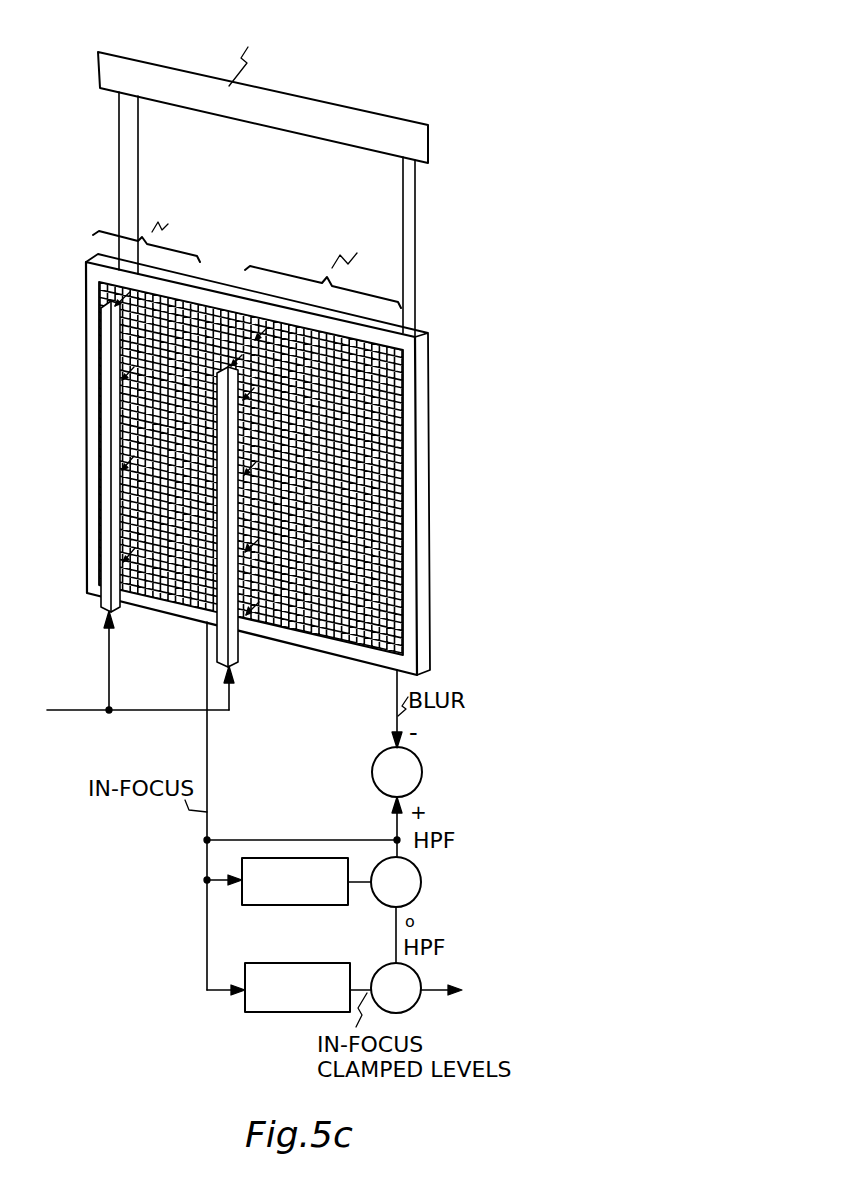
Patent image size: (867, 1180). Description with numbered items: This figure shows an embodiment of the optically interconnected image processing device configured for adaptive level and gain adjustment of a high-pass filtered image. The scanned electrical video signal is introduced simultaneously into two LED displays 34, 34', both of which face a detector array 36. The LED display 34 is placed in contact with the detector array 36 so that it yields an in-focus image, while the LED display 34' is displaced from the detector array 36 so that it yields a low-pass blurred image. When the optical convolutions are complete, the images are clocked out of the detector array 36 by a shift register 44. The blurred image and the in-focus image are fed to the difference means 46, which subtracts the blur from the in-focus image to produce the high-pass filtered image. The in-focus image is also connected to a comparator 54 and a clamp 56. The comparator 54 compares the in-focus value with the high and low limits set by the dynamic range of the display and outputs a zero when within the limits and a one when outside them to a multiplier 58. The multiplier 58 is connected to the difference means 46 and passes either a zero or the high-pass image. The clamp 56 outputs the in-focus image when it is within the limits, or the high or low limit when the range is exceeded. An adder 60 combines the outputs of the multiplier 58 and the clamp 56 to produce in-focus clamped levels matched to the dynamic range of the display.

The shift register 44 is at (427, 125).
The detector array 36 is at (430, 388).
The LED display 34 is at (71, 501).
The LED display 34' is at (215, 519).
The difference means 46 is at (421, 758).
The comparator 54 is at (331, 856).
The multiplier 58 is at (421, 882).
The clamp 56 is at (262, 1012).
The adder 60 is at (420, 1003).